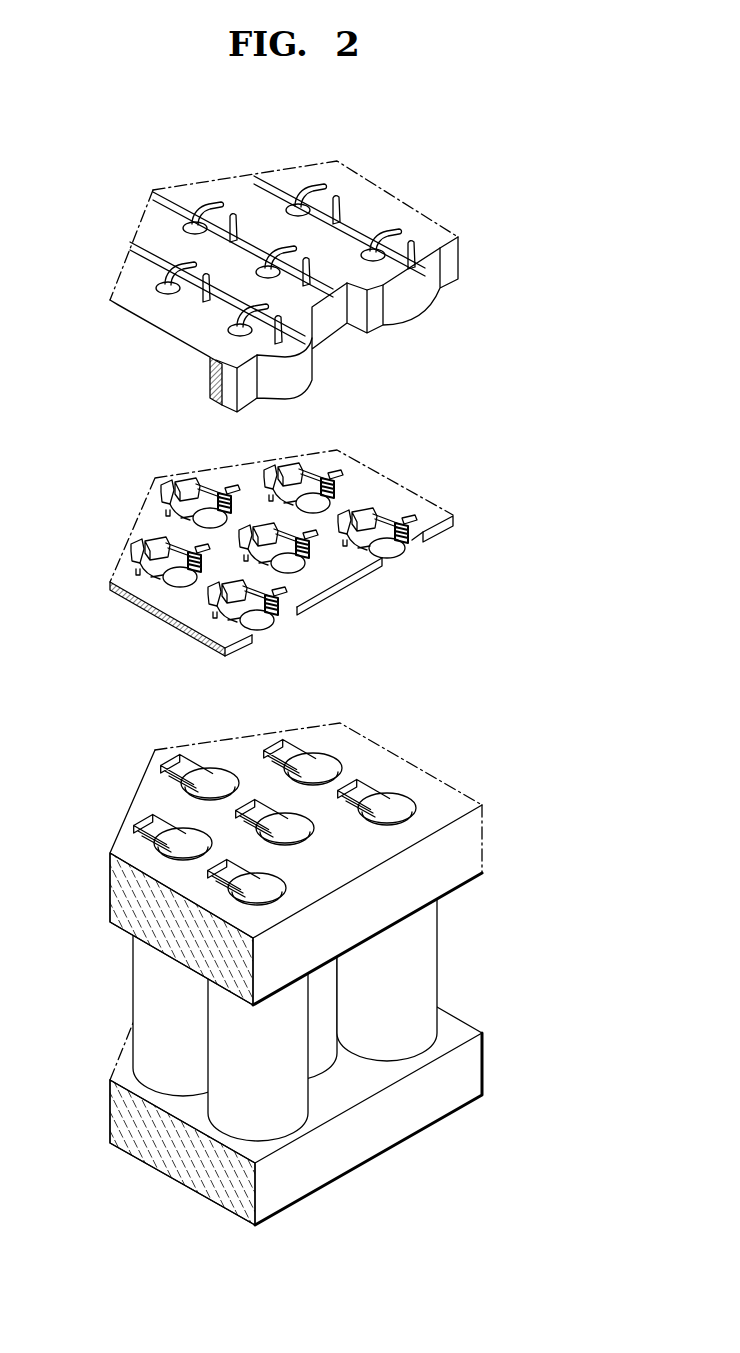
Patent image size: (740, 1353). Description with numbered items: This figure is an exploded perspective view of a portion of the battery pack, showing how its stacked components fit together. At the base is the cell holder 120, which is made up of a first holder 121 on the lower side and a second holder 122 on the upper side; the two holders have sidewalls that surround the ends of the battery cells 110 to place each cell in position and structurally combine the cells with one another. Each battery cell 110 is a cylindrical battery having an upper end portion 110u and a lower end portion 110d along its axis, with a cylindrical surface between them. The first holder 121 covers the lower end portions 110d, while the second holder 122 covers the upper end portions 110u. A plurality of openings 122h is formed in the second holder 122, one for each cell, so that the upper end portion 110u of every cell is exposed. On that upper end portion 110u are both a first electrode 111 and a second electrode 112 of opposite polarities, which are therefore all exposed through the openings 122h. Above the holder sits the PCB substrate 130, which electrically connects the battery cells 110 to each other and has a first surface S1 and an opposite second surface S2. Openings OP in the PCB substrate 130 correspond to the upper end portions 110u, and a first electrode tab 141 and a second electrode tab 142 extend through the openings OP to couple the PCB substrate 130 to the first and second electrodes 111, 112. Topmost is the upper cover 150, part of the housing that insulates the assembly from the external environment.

The upper cover 150 is at (422, 221).
The first surface S1 is at (352, 466).
The second electrode tab 142 is at (363, 508).
The PCB substrate 130 is at (329, 526).
The second surface S2 is at (447, 538).
The first electrode tab 141 is at (388, 554).
The opening OP is at (410, 548).
The first electrode 111 is at (313, 777).
The opening 122h is at (297, 748).
The second electrode 112 is at (283, 755).
The upper end portion 110u is at (392, 817).
The second holder 122 is at (337, 831).
The battery cell 110 is at (286, 1049).
The cell holder 120 is at (346, 941).
The first holder 121 is at (463, 1063).
The lower end portion 110d is at (246, 1137).